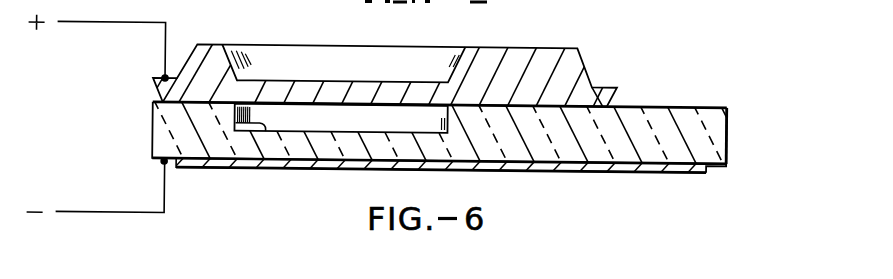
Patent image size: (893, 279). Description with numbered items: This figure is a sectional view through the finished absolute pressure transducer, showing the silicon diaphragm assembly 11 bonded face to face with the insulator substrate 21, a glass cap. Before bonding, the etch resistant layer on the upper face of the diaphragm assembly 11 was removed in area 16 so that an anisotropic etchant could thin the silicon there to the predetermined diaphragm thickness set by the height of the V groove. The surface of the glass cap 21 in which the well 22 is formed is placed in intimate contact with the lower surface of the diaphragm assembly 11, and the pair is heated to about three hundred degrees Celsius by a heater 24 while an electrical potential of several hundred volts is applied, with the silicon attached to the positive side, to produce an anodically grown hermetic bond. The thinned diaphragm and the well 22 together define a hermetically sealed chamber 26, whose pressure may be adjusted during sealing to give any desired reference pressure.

The silicon diaphragm assembly 11 is at (546, 48).
The exposed area of face 16 is at (265, 79).
The insulator substrate 21 is at (634, 102).
The well 22 is at (264, 124).
The heater 24 is at (678, 167).
The hermetically sealed chamber 26 is at (315, 116).